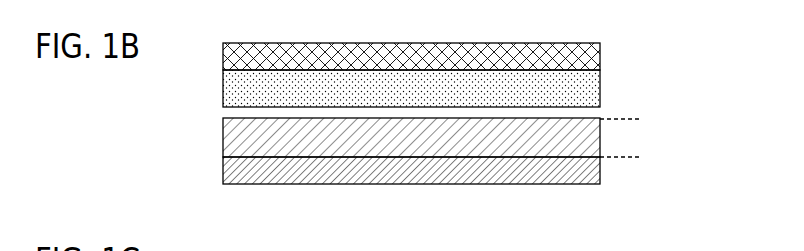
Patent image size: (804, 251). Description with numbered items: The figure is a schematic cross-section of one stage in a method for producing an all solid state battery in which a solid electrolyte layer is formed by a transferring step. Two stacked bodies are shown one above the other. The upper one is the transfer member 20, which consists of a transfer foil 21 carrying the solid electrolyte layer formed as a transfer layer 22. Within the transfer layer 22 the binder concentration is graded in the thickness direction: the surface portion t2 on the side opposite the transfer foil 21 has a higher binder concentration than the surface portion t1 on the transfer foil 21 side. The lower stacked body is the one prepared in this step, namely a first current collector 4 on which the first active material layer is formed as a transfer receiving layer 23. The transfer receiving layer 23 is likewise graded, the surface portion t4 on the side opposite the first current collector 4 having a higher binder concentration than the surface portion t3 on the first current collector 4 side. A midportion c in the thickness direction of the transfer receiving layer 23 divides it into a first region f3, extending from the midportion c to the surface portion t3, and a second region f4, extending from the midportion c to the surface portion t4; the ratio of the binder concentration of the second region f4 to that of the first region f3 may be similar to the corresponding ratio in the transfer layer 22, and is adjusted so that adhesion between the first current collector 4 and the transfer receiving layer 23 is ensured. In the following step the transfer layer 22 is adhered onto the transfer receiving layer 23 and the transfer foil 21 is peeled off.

The transfer member 20 is at (482, 76).
The transfer foil 21 is at (595, 56).
The transfer layer 22 is at (460, 88).
The transfer receiving layer 23 is at (574, 138).
The first current collector 4 is at (512, 168).
The surface portion on transfer foil side t1 is at (241, 72).
The surface portion on opposite side to transfer foil t2 is at (241, 104).
The surface portion on first current collector side t3 is at (243, 156).
The surface portion on opposite side to first current collector t4 is at (243, 121).
The midportion c is at (640, 138).
The first region f3 is at (642, 138).
The second region f4 is at (642, 119).